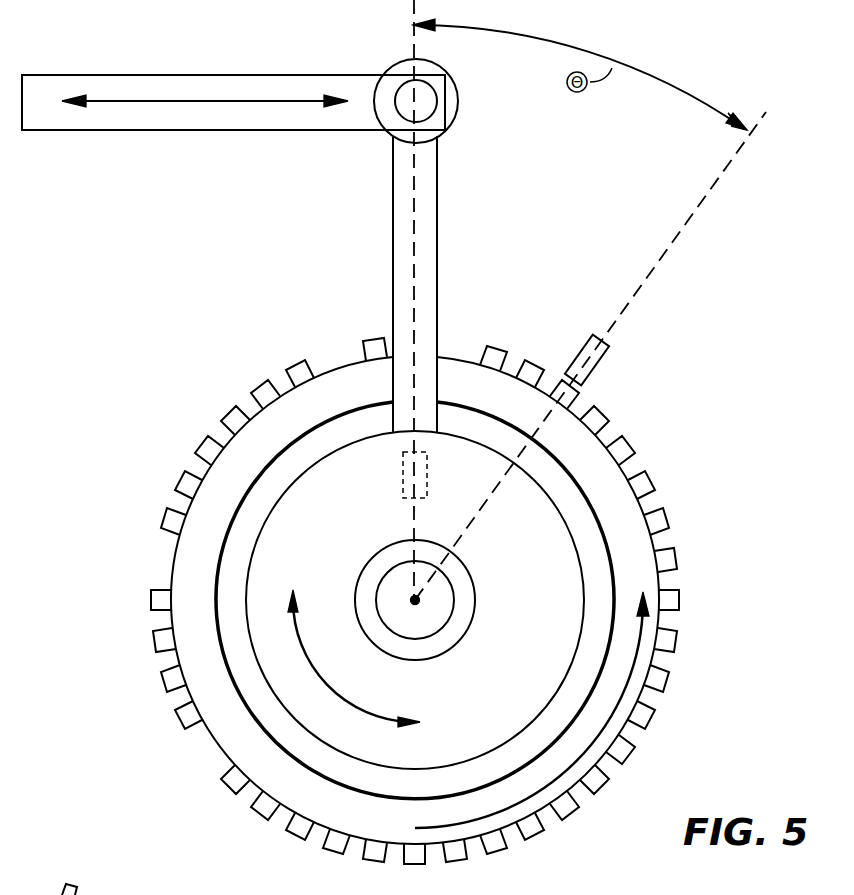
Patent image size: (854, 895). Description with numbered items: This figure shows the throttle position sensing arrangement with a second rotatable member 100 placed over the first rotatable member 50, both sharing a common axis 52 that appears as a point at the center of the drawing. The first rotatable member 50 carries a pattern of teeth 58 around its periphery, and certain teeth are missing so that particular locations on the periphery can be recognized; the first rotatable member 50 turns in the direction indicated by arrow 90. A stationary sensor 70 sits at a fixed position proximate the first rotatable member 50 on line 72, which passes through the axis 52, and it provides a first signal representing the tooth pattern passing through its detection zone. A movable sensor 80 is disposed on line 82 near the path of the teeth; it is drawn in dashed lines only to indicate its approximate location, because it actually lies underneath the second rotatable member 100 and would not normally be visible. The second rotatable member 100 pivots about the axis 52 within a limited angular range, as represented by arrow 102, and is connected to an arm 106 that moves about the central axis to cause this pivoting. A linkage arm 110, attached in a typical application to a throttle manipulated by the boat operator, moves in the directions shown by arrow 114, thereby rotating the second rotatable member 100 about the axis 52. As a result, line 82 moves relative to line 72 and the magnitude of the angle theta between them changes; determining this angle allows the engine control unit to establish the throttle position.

The first rotatable member 50 is at (185, 570).
The axis 52 is at (400, 592).
The teeth 58 is at (678, 553).
The stationary sensor 70 is at (602, 362).
The line 72 is at (668, 254).
The movable sensor 80 is at (403, 477).
The line 82 is at (410, 245).
The arrow 90 is at (600, 740).
The second rotatable member 100 is at (557, 545).
The arrow 102 is at (320, 673).
The arm 106 is at (392, 184).
The linkage arm 110 is at (262, 73).
The arrow 114 is at (178, 105).